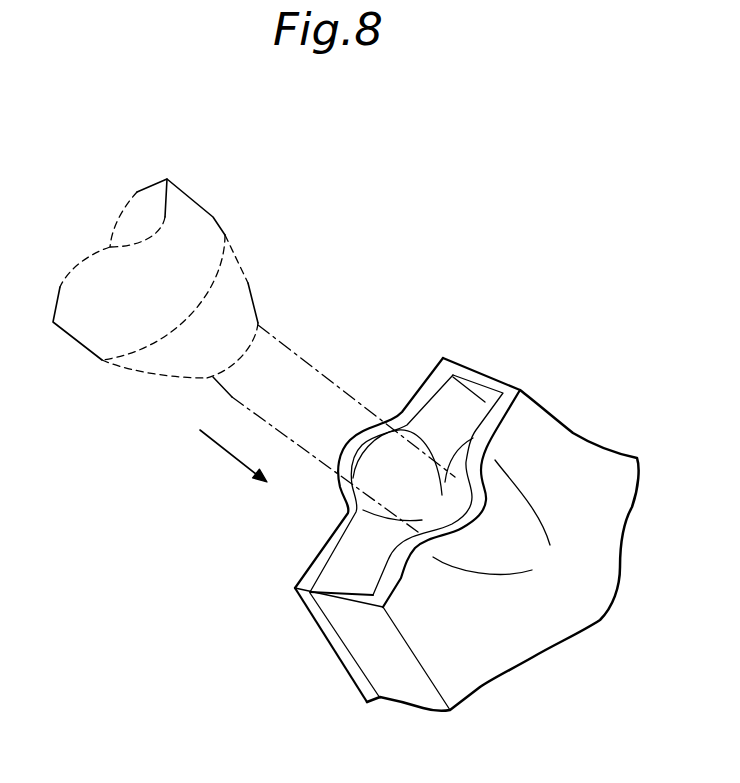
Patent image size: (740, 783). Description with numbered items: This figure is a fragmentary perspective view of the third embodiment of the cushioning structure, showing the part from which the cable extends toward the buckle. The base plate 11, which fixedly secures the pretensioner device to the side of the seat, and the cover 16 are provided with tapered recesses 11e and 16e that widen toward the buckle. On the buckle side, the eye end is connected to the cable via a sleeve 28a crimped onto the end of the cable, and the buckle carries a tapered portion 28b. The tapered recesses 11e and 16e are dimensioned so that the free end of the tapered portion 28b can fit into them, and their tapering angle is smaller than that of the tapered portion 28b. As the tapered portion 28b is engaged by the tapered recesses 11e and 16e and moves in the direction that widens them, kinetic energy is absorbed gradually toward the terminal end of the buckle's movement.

The sleeve 28a is at (210, 254).
The tapered portion 28b is at (248, 283).
The base plate 11 is at (385, 528).
The tapered recess 11e is at (390, 447).
The cover 16 is at (504, 541).
The tapered recess 16e is at (473, 438).